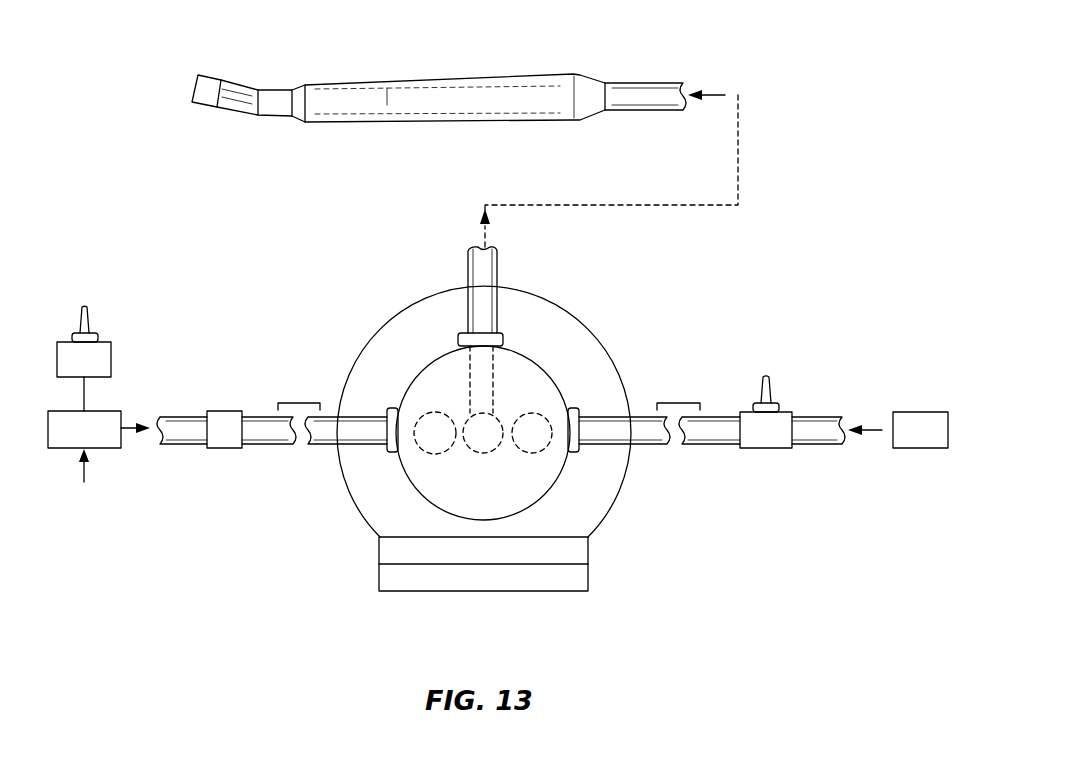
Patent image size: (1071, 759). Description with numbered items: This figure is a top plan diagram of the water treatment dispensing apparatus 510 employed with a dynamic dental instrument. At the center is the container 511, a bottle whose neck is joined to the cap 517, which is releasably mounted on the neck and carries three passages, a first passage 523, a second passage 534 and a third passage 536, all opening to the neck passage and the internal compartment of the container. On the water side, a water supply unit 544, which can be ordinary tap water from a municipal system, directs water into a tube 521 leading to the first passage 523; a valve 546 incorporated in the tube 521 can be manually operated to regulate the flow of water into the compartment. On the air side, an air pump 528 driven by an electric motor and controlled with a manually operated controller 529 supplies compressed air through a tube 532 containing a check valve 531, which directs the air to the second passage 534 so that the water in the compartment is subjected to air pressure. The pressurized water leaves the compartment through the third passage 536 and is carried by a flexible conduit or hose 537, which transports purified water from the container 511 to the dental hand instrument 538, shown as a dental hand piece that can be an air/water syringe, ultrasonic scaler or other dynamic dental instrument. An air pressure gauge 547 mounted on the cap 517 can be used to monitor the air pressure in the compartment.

The dental hand instrument 538 is at (522, 68).
The water treatment dispensing apparatus 510 is at (783, 269).
The container 511 is at (385, 323).
The cap 517 is at (552, 369).
The air pressure gauge 547 is at (400, 591).
The flexible conduit or hose 537 is at (482, 265).
The third passage 536 is at (482, 377).
The second passage 534 is at (430, 425).
The first passage 523 is at (528, 428).
The manually operated controller 529 is at (112, 362).
The air pump 528 is at (122, 420).
The check valve 531 is at (219, 411).
The tube 532 is at (270, 441).
The tube 521 is at (702, 438).
The valve 546 is at (770, 448).
The water supply unit 544 is at (912, 448).